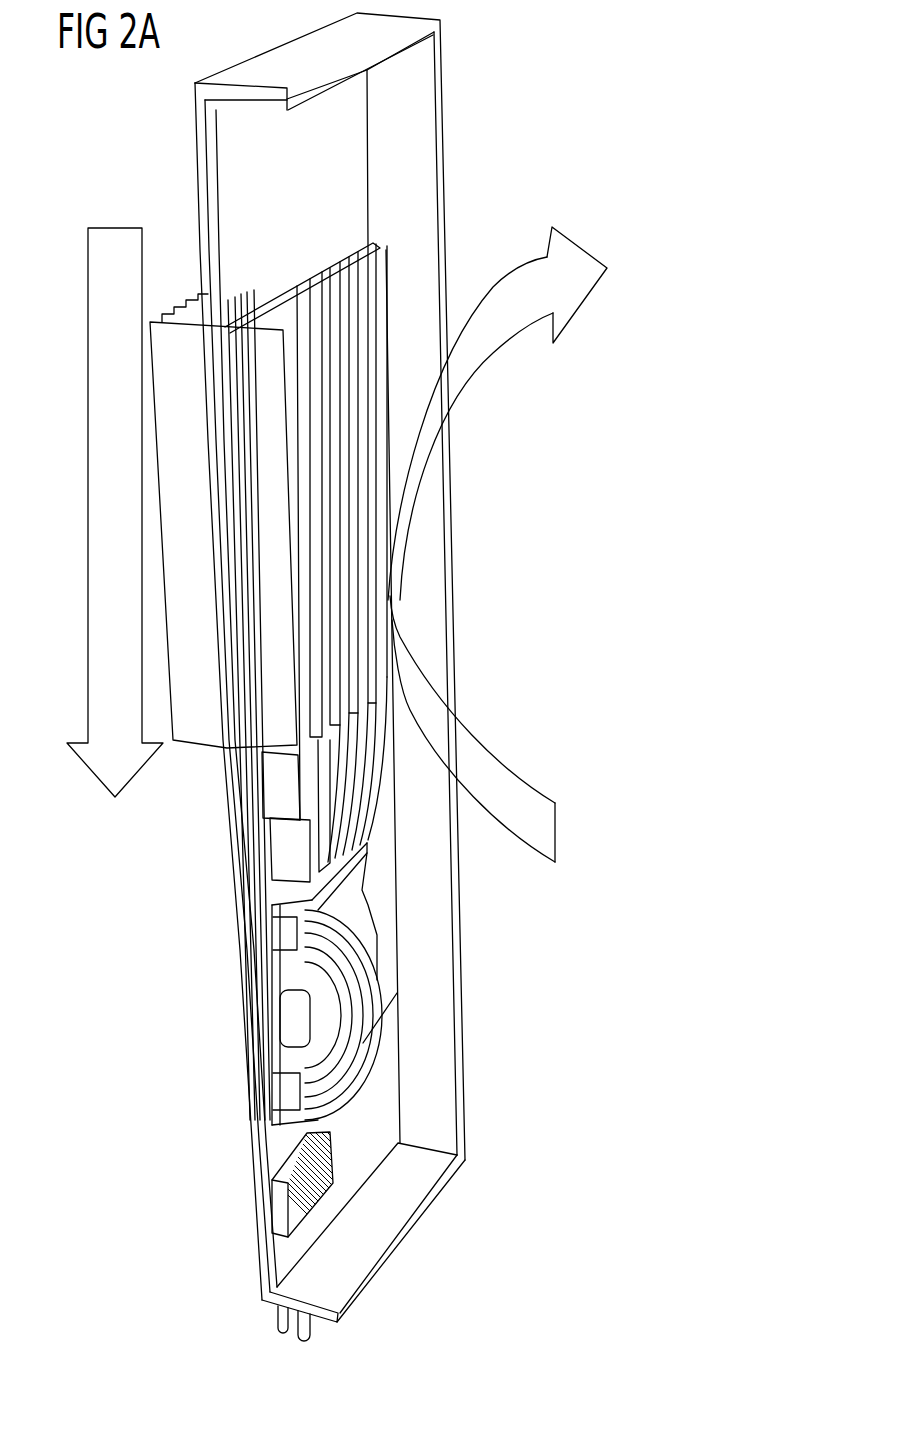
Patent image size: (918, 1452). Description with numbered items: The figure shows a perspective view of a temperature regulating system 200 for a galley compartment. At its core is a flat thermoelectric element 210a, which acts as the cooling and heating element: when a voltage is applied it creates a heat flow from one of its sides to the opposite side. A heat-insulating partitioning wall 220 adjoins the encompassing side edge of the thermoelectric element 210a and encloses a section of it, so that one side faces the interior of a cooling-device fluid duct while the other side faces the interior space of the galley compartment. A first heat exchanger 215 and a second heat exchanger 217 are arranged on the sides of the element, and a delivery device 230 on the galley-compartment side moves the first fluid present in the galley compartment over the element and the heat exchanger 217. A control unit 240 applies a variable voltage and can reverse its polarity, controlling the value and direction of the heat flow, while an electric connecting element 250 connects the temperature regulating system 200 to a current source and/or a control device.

The temperature regulating system 200 is at (490, 556).
The thermoelectric element 210a is at (382, 248).
The first heat exchanger 215 is at (203, 722).
The second heat exchanger 217 is at (233, 793).
The heat-insulating partitioning wall 220 is at (196, 172).
The delivery device 230 is at (387, 1040).
The control unit 240 is at (280, 1207).
The electric connecting element 250 is at (282, 1346).